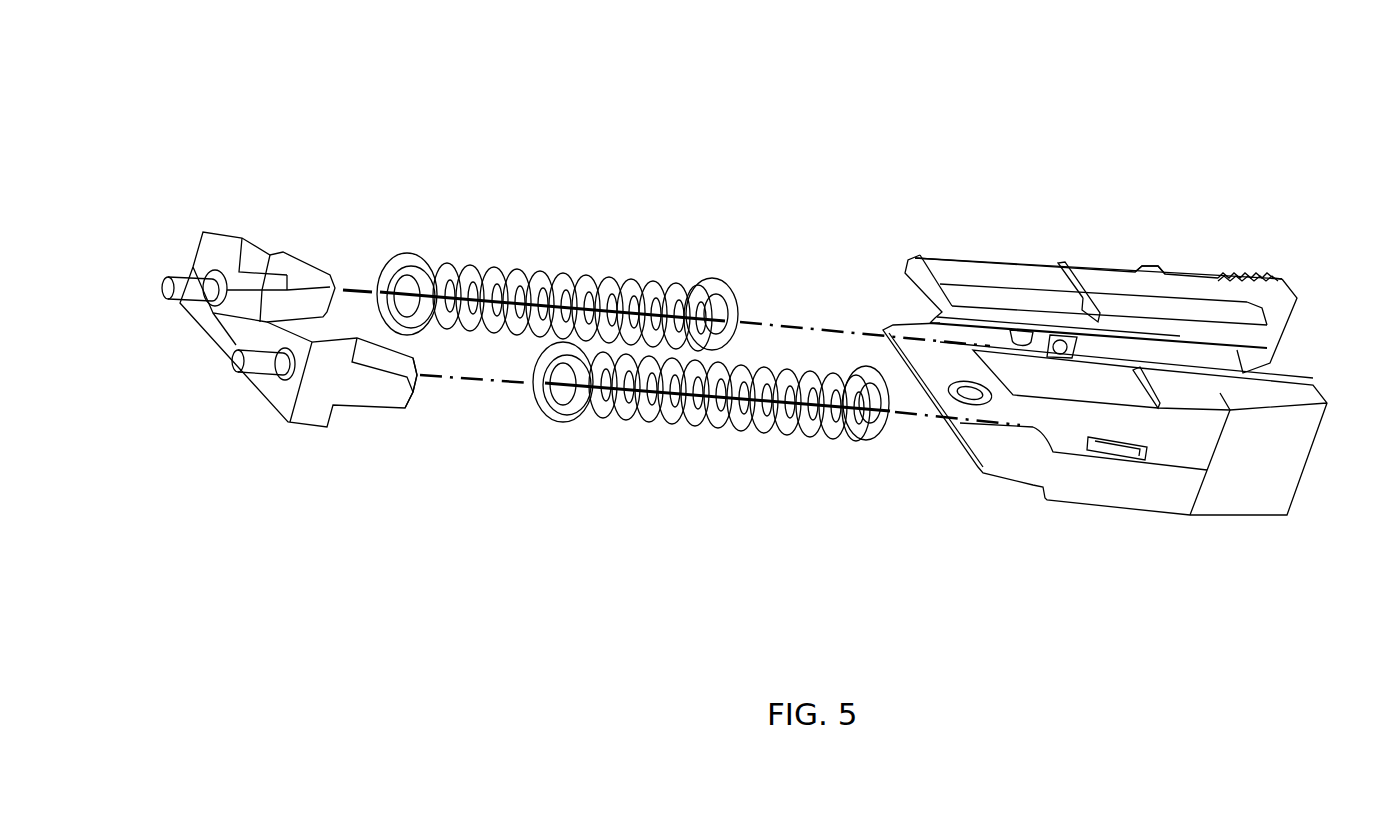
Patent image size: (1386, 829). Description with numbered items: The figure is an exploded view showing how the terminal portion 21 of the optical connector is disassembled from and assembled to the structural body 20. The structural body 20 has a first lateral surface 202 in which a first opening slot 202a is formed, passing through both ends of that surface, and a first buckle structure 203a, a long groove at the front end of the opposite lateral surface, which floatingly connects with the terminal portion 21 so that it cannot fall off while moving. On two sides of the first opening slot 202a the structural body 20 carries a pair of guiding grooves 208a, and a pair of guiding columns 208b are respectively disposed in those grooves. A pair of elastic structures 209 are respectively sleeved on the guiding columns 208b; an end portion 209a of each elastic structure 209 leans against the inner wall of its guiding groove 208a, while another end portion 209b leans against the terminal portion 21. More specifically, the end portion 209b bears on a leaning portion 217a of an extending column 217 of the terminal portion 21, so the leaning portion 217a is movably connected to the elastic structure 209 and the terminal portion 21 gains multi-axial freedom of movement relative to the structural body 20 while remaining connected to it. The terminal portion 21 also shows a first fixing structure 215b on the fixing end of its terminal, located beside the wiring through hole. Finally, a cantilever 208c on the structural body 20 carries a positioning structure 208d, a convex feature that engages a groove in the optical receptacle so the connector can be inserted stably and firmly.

The structural body 20 is at (968, 483).
The terminal portion 21 is at (235, 407).
The first lateral surface 202 is at (1196, 394).
The first opening slot 202a is at (1177, 340).
The first buckle structure 203a is at (957, 388).
The guiding grooves 208a is at (987, 330).
The guiding columns 208b is at (1050, 340).
The cantilever 208c is at (1273, 278).
The positioning structure 208d is at (1152, 272).
The elastic structures 209 is at (608, 272).
The end portion 209a is at (712, 278).
The another end portion 209b is at (422, 252).
The first fixing structure 215b is at (192, 285).
The extending column 217 is at (300, 259).
The leaning portion 217a is at (418, 394).